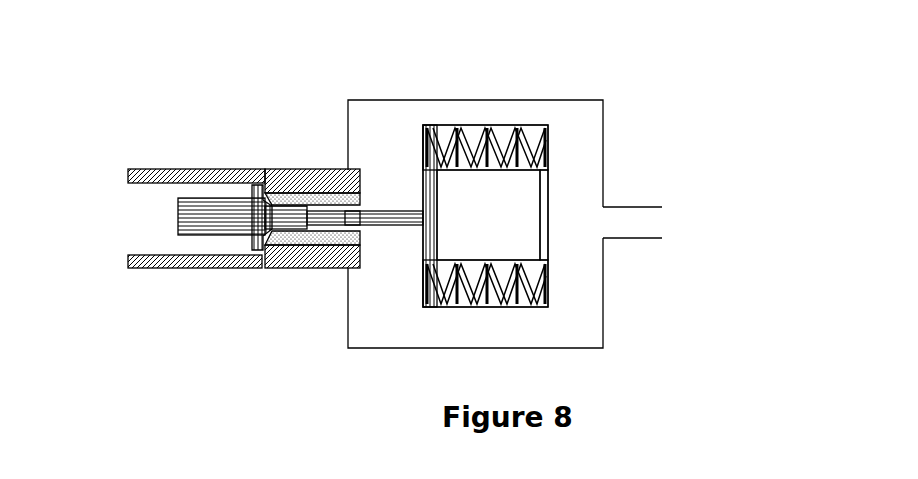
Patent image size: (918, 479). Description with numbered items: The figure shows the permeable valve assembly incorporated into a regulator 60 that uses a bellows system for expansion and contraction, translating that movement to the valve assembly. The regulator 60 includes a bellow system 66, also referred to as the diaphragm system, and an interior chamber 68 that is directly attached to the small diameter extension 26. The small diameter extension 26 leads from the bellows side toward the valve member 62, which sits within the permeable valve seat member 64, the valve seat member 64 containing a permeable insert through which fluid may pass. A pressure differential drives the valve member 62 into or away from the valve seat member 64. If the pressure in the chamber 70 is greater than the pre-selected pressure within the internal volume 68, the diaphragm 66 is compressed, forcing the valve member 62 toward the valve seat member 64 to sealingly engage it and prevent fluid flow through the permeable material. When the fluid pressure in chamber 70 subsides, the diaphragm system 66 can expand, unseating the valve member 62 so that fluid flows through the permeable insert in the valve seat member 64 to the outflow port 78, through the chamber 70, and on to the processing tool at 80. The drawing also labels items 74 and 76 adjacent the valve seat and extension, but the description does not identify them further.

The regulator 60 is at (697, 127).
The chamber 70 is at (535, 105).
The processing tool 80 is at (645, 222).
The cylinder / sleeve 74 is at (140, 223).
The valve seat member 64 is at (313, 263).
The bearing / packing 76 is at (290, 240).
The valve member 62 is at (232, 210).
The small diameter extension 26 is at (403, 215).
The outflow port 78 is at (347, 212).
The interior chamber 68 is at (485, 212).
The bellow system 66 is at (527, 145).